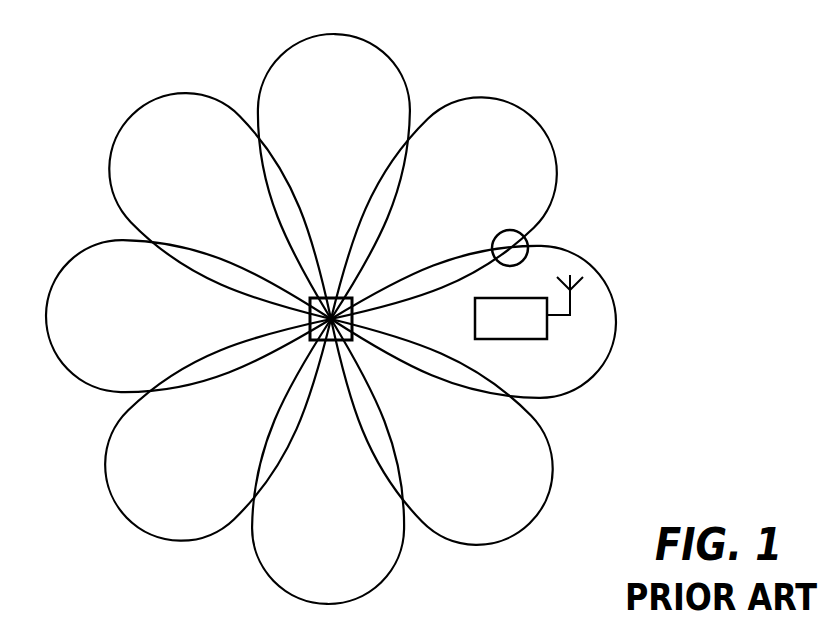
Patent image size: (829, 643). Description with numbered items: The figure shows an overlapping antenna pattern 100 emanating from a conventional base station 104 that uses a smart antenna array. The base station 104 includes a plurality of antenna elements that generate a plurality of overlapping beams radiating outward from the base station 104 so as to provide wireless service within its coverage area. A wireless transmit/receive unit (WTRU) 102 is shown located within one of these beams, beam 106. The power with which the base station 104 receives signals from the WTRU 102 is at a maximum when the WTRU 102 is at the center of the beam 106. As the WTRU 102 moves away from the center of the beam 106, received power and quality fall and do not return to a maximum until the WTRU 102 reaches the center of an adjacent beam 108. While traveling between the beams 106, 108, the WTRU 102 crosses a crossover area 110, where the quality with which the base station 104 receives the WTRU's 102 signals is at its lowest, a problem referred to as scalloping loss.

The overlapping antenna pattern 100 is at (727, 43).
The wireless transmit/receive unit (WTRU) 102 is at (541, 340).
The base station 104 is at (328, 298).
The beam 106 is at (617, 296).
The adjacent beam 108 is at (553, 143).
The crossover area 110 is at (527, 243).